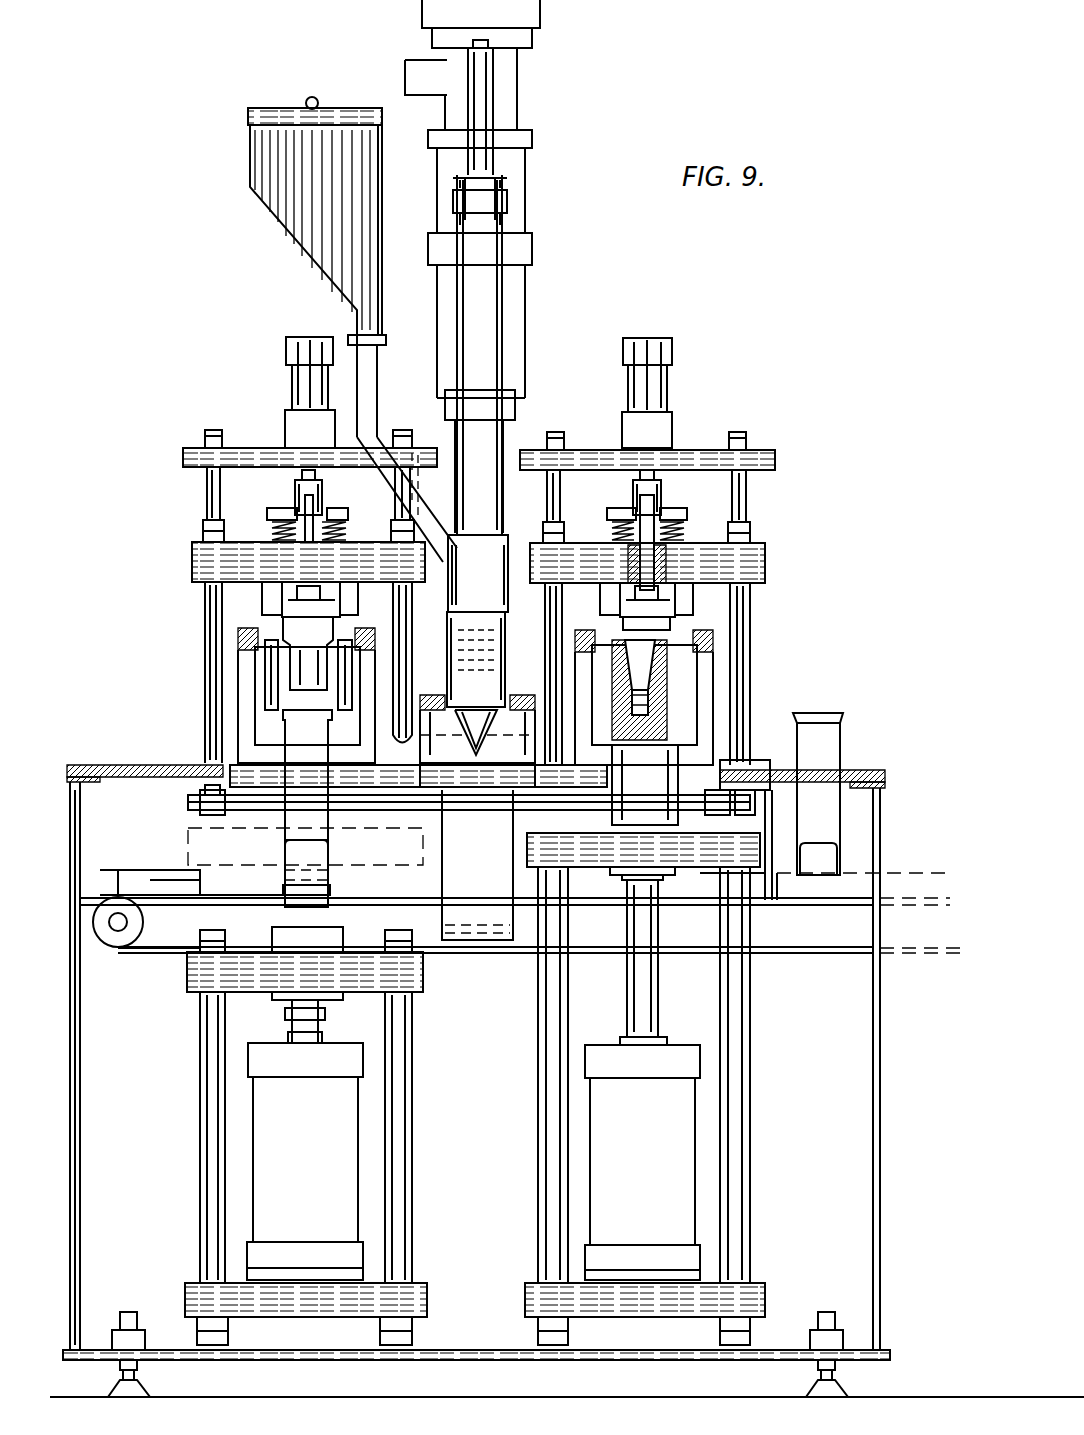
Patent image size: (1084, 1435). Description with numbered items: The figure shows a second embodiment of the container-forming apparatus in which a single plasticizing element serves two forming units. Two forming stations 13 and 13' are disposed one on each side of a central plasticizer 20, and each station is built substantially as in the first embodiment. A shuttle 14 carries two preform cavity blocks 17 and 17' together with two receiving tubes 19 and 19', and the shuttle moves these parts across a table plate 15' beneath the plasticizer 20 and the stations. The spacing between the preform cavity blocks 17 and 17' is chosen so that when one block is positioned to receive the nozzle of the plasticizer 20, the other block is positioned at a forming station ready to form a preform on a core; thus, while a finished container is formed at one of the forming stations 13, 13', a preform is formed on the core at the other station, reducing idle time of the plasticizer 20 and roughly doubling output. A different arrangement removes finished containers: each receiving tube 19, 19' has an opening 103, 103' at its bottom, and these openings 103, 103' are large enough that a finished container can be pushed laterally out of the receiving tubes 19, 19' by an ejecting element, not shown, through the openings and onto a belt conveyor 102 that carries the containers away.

The forming station 13 is at (266, 550).
The forming station 13' is at (689, 551).
The shuttle 14 is at (690, 772).
The mold table plate 15' is at (418, 815).
The preform cavity block 17 is at (477, 909).
The preform cavity block 17' is at (707, 697).
The receiving tube 19 is at (229, 808).
The receiving tube 19' is at (850, 794).
The plasticizer 20 is at (508, 552).
The belt conveyor 102 is at (170, 947).
The opening 103 is at (292, 896).
The opening 103' is at (876, 850).